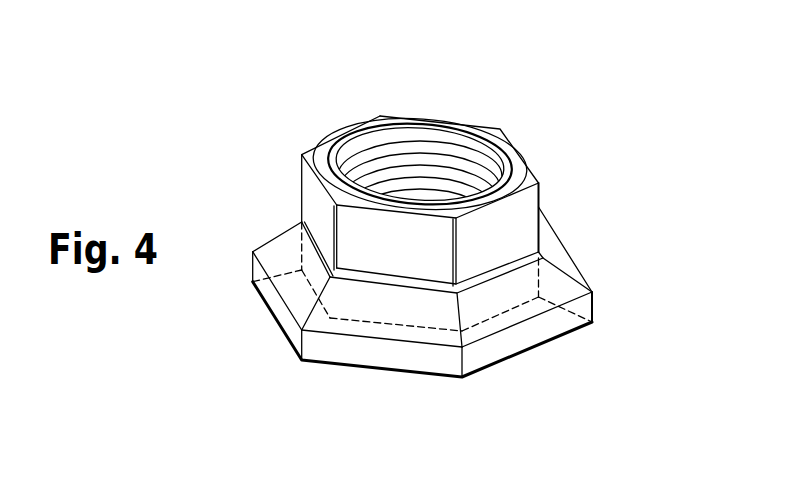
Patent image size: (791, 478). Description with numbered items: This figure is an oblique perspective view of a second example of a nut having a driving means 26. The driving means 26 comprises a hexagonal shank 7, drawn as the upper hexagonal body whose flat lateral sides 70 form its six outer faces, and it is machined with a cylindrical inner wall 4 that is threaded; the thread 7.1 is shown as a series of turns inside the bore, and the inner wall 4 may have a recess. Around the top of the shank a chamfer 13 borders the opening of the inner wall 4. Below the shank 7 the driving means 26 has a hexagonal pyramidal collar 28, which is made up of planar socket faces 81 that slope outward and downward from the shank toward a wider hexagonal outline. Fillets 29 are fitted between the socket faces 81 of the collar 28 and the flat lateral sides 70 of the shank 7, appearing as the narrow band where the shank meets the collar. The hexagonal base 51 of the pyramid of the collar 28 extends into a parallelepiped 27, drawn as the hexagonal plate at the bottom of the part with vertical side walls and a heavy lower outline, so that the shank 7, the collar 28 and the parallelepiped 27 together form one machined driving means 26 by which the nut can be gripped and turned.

The driving means 26 is at (305, 132).
The hexagonal shank 7 is at (527, 198).
The thread 7.1 is at (432, 228).
The cylindrical inner wall 4 is at (483, 153).
The chamfer 13 is at (350, 133).
The flat lateral sides 70 is at (312, 188).
The fillets 29 is at (380, 278).
The planar socket faces 81 is at (289, 292).
The hexagonal pyramidal collar 28 is at (555, 240).
The parallelepiped 27 is at (537, 330).
The hexagonal base 51 is at (423, 375).